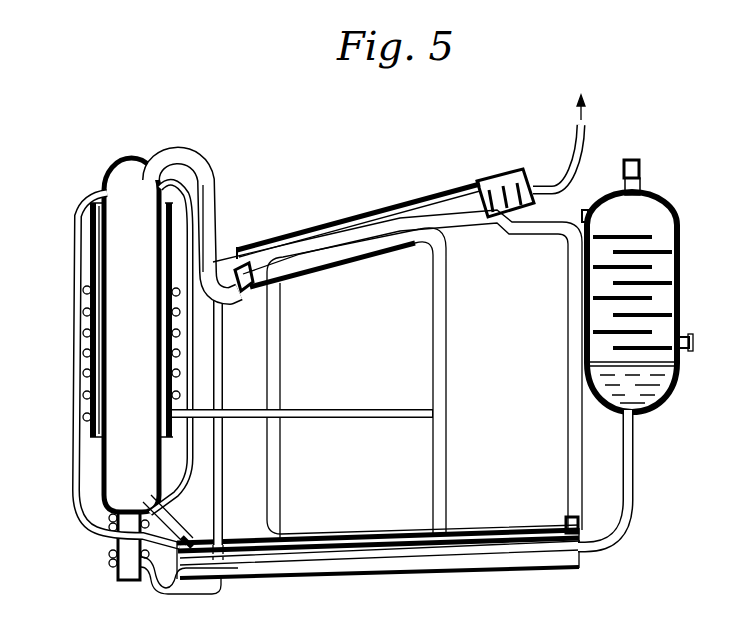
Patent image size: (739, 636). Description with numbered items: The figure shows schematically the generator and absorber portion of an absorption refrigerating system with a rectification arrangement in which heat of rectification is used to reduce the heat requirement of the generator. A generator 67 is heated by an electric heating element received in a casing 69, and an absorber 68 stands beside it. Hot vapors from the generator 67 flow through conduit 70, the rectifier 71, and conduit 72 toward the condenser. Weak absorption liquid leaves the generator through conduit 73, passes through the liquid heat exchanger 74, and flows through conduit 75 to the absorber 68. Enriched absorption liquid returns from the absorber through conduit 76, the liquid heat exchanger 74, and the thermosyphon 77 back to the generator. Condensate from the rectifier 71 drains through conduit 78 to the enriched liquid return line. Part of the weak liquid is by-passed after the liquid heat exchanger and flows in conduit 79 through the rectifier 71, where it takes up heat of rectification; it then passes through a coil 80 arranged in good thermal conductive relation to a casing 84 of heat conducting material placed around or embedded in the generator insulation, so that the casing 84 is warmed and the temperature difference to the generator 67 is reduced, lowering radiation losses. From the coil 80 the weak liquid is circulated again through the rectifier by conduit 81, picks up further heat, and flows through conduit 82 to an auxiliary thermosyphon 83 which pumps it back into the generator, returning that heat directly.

The generator 67 is at (104, 183).
The absorber 68 is at (678, 243).
The casing 69 is at (118, 570).
The conduit 70 is at (217, 182).
The rectifier 71 is at (356, 262).
The conduit 72 is at (587, 148).
The conduit 73 is at (172, 524).
The liquid heat exchanger 74 is at (365, 578).
The conduit 75 is at (567, 437).
The conduit 76 is at (635, 476).
The thermosyphon 77 is at (72, 489).
The conduit 78 is at (223, 342).
The conduit 79 is at (546, 234).
The coil 80 is at (83, 334).
The conduit 81 is at (340, 419).
The conduit 82 is at (278, 463).
The auxiliary thermosyphon 83 is at (191, 468).
The casing 84 is at (90, 243).